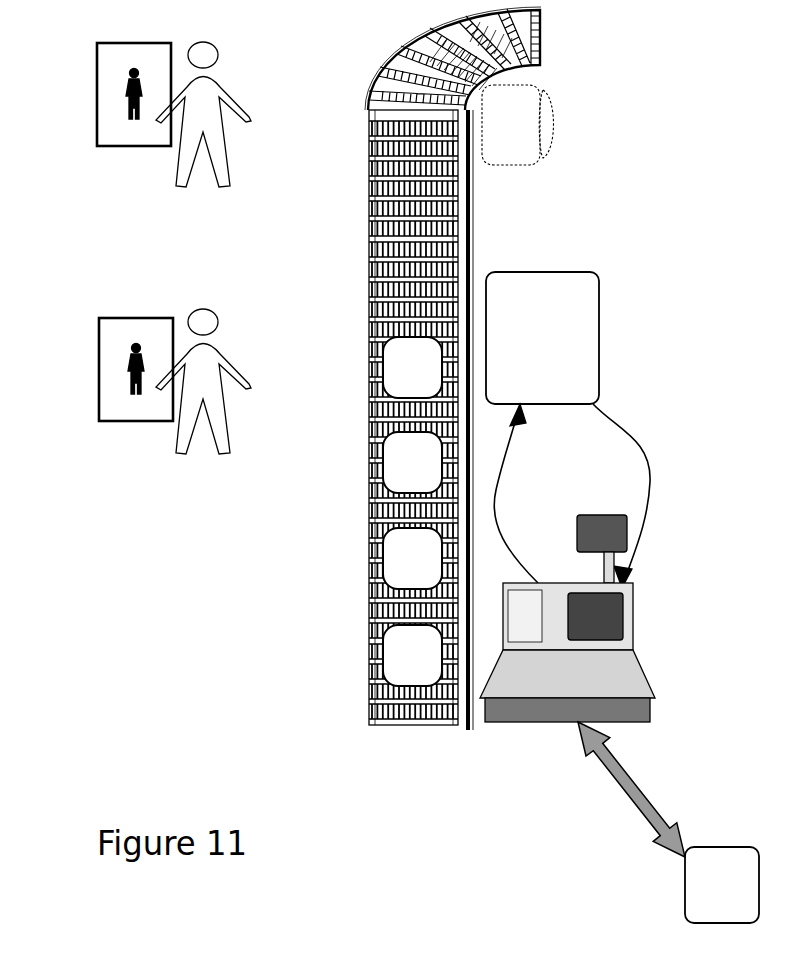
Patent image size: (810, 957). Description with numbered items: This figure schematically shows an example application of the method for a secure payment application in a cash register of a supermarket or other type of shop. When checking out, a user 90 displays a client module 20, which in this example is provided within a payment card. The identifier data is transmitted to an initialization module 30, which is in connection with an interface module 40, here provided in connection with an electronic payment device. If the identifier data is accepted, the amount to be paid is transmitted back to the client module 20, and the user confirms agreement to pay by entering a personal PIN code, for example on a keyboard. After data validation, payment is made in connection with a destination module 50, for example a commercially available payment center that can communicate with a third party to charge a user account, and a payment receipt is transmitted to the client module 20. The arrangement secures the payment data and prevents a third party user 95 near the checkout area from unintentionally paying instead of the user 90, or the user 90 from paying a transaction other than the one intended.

The client module 20 is at (112, 96).
The third party user 95 is at (208, 59).
The user 90 is at (208, 326).
The initialization module 30 is at (580, 318).
The interface module 40 is at (620, 613).
The destination module 50 is at (695, 887).